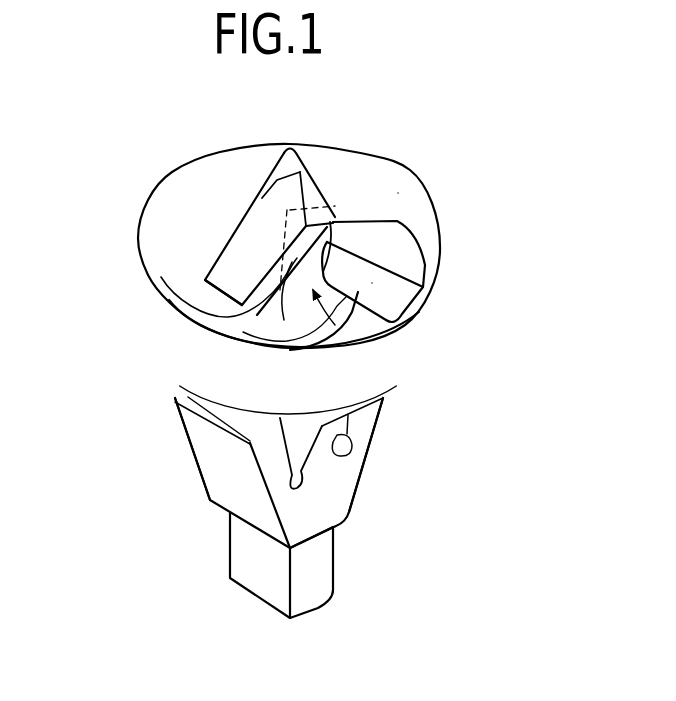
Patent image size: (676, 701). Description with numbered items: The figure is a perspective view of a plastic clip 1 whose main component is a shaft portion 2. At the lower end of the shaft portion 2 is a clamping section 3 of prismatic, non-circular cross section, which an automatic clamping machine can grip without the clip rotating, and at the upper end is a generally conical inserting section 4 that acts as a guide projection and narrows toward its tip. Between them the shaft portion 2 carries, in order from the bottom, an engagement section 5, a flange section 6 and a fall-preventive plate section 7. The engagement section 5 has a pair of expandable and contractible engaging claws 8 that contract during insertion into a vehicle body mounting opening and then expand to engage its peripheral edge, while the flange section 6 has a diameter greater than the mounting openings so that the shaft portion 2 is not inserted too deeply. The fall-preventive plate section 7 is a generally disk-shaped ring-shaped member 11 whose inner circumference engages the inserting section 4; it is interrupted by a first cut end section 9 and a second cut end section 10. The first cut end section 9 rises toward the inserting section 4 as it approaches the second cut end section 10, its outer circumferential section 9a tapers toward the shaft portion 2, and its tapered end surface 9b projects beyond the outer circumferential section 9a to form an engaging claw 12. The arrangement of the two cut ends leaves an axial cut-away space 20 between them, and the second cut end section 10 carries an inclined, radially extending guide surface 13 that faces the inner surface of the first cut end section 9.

The clip 1 is at (396, 90).
The shaft portion 2 is at (352, 568).
The clamping section 3 is at (257, 567).
The inserting section 4 is at (273, 170).
The engagement section 5 is at (375, 472).
The flange section 6 is at (417, 332).
The fall-preventive plate section 7 is at (460, 176).
The engaging claws 8 is at (365, 427).
The first cut end section 9 is at (253, 271).
The outer circumferential section 9a is at (283, 326).
The end surface 9b is at (313, 197).
The second cut end section 10 is at (417, 287).
The ring-shaped member 11 is at (398, 193).
The engaging claw 12 is at (333, 222).
The guide surface 13 is at (372, 283).
The cut-away space 20 is at (335, 325).